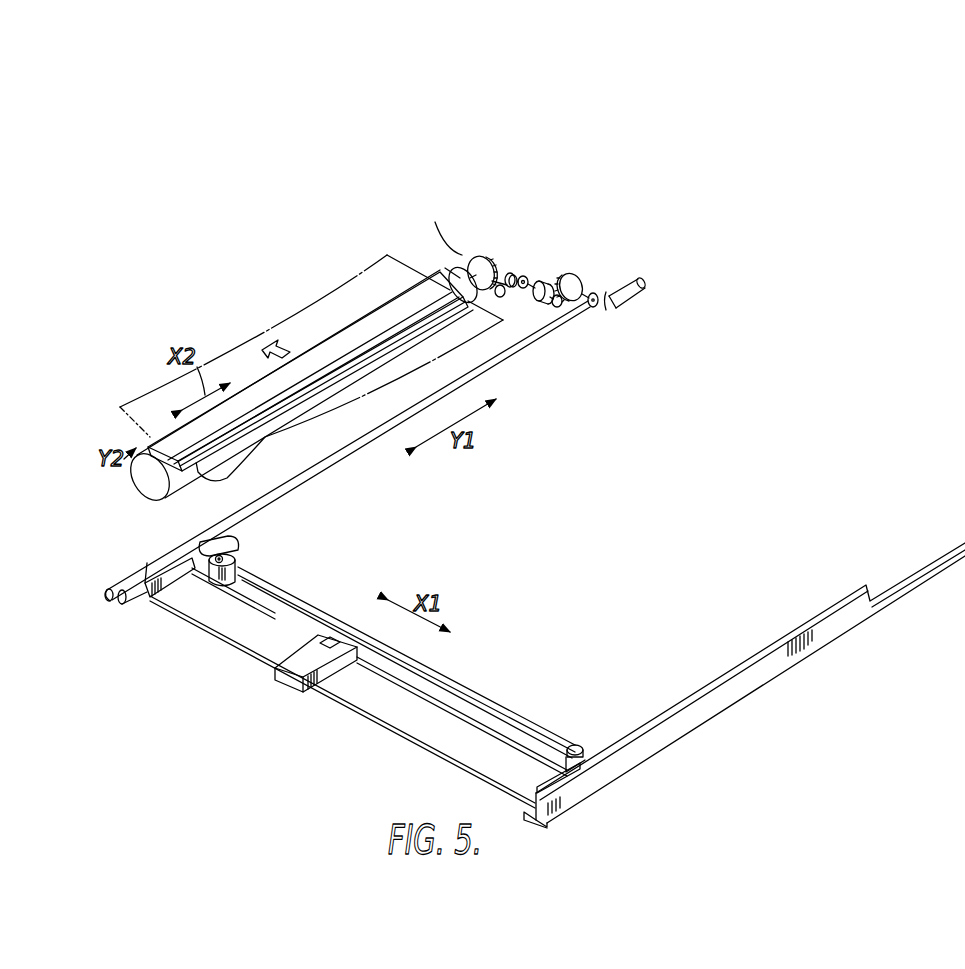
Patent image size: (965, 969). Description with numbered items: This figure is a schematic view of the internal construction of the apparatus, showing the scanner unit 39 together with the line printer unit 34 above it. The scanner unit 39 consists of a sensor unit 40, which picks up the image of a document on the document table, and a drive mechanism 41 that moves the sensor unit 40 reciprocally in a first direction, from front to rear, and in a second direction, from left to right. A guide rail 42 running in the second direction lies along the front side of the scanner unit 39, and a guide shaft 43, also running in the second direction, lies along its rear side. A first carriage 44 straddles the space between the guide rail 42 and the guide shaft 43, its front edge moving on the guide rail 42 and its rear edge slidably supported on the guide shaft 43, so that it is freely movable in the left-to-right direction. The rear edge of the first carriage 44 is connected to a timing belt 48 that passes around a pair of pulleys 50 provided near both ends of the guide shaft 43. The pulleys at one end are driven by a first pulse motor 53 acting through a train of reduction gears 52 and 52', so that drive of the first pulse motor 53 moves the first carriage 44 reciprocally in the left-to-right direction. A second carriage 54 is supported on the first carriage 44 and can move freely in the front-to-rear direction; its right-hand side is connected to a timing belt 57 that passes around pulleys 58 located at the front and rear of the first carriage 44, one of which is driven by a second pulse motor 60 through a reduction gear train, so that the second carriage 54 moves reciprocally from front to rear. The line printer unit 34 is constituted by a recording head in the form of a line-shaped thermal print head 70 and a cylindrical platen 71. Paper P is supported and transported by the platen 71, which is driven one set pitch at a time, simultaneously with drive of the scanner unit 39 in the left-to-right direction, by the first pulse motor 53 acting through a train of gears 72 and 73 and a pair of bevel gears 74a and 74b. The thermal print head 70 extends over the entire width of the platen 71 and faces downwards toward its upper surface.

The line printer unit 34 is at (441, 222).
The scanner unit 39 is at (377, 706).
The sensor unit 40 is at (330, 640).
The drive mechanism 41 is at (440, 658).
The guide rail 42 is at (716, 700).
The guide shaft 43 is at (647, 292).
The first carriage 44 is at (457, 749).
The timing belt 48 is at (480, 368).
The pulley 50 is at (598, 306).
The reduction gear 52 is at (588, 271).
The reduction gear 52' is at (571, 334).
The first pulse motor 53 is at (547, 282).
The second carriage 54 is at (296, 674).
The timing belt 57 is at (520, 716).
The pulley 58 is at (233, 545).
The second pulse motor 60 is at (238, 560).
The line-shaped thermal print head 70 is at (200, 458).
The platen 71 is at (146, 485).
The gear 72 is at (481, 256).
The gear 73 is at (502, 297).
The bevel gear 74a is at (511, 273).
The bevel gear 74b is at (527, 276).
The paper P is at (156, 404).